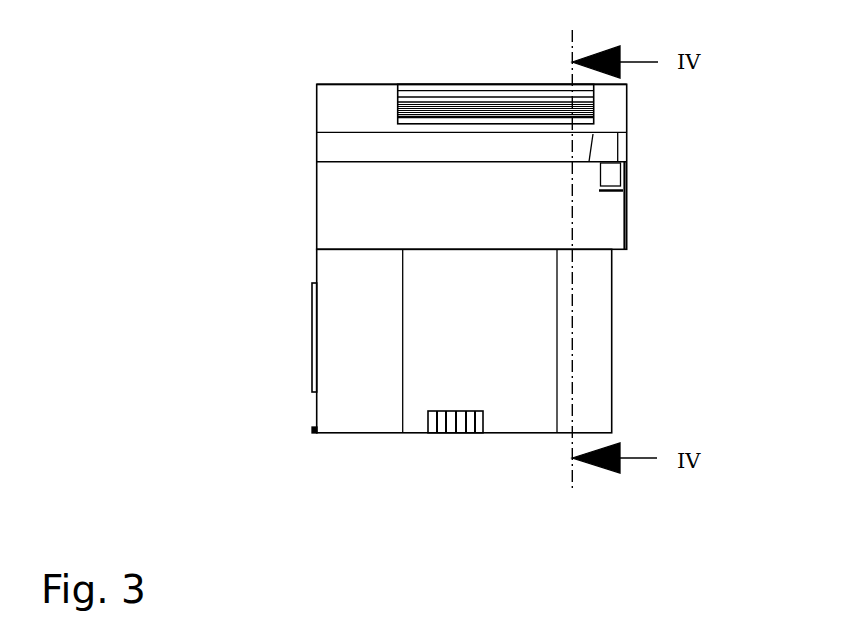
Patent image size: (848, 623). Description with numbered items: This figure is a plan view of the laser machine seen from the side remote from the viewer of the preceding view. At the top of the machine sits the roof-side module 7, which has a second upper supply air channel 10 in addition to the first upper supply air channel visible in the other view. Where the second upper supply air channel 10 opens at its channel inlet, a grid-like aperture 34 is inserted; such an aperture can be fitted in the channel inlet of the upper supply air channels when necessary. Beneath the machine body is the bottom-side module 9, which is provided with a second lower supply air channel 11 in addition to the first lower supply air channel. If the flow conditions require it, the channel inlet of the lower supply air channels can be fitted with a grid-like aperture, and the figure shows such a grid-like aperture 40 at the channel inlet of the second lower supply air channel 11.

The roof-side module 7 is at (290, 105).
The second upper supply air channel 10 is at (406, 67).
The grid-like aperture 34 is at (505, 95).
The bottom-side module 9 is at (298, 413).
The second lower supply air channel 11 is at (431, 453).
The grid-like aperture 40 is at (470, 441).